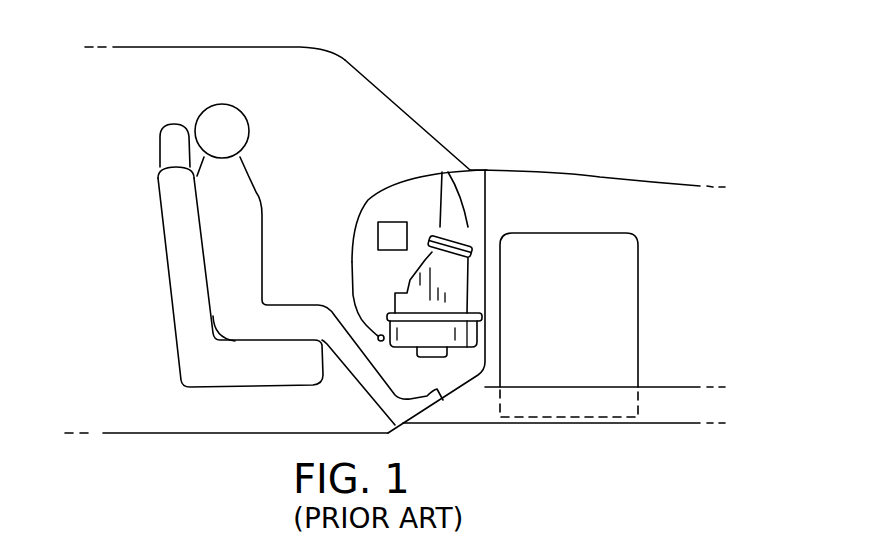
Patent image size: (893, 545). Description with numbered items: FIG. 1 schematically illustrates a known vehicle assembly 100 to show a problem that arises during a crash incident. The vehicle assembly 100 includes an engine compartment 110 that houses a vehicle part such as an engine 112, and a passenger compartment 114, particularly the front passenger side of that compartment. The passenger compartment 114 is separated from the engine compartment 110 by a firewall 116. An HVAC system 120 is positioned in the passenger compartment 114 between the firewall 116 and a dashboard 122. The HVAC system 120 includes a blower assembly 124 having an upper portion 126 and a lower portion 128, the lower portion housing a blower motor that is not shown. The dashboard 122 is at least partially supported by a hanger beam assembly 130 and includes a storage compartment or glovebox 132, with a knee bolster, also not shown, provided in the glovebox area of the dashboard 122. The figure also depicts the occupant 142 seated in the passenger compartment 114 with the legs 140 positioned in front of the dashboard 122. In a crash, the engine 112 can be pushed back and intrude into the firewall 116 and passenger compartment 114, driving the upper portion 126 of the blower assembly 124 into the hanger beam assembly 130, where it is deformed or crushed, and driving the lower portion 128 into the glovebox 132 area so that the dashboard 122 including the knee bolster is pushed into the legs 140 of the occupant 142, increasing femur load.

The vehicle assembly 100 is at (518, 73).
The engine compartment 110 is at (660, 197).
The engine 112 is at (620, 305).
The passenger compartment 114 is at (328, 92).
The firewall 116 is at (487, 207).
The HVAC system 120 is at (422, 199).
The dashboard 122 is at (373, 195).
The blower assembly 124 is at (478, 293).
The upper portion 126 is at (453, 197).
The lower portion 128 is at (472, 334).
The hanger beam assembly 130 is at (387, 237).
The glovebox 132 is at (363, 290).
The legs 140 is at (363, 377).
The occupant 142 is at (223, 245).